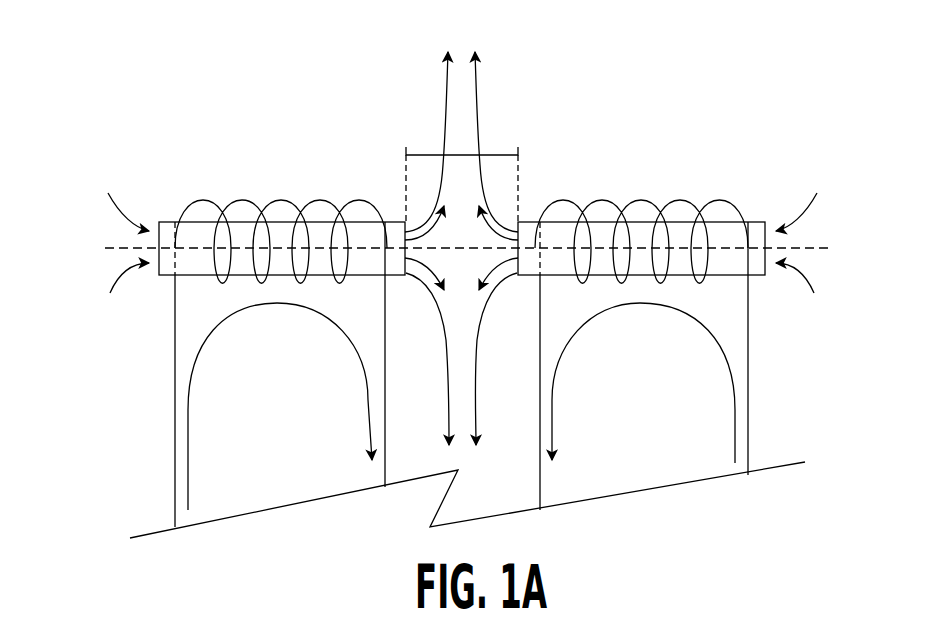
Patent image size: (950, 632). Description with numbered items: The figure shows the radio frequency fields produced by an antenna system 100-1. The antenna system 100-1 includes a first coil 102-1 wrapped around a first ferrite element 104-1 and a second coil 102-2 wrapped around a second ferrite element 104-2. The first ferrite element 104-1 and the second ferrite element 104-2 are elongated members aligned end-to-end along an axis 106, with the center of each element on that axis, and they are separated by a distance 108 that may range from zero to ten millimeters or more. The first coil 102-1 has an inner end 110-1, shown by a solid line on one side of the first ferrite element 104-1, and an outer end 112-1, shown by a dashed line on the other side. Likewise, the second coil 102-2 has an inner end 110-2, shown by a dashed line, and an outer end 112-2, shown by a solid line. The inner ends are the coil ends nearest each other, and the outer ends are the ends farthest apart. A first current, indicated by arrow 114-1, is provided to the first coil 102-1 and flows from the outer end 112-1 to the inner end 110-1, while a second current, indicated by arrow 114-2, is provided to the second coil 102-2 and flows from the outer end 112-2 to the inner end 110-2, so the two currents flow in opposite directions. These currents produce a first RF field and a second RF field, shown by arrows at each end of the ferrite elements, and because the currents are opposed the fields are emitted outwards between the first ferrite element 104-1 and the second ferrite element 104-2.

The antenna system 100-1 is at (107, 42).
The first coil 102-1 is at (203, 201).
The second coil 102-2 is at (603, 201).
The first ferrite element 104-1 is at (162, 222).
The second ferrite element 104-2 is at (765, 222).
The axis 106 is at (815, 247).
The distance 108 is at (428, 152).
The inner end of the first coil 110-1 is at (373, 190).
The inner end of the second coil 110-2 is at (550, 190).
The outer end of the first coil 112-1 is at (187, 190).
The outer end of the second coil 112-2 is at (737, 190).
The arrow indicating first current 114-1 is at (193, 395).
The arrow indicating second current 114-2 is at (732, 395).